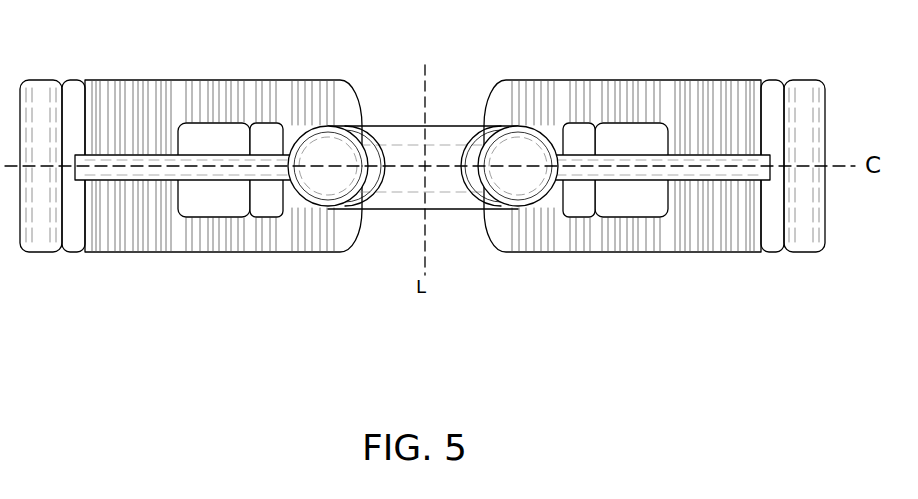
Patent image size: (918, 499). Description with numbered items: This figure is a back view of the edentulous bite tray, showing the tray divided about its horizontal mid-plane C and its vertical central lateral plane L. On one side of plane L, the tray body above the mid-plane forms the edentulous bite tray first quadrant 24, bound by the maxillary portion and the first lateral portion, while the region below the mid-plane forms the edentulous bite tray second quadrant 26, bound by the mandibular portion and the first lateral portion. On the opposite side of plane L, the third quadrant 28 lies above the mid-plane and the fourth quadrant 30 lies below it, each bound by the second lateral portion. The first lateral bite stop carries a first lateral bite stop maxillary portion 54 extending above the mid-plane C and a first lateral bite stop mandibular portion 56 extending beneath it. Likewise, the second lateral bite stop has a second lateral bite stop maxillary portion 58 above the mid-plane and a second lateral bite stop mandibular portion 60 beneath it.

The edentulous bite tray first quadrant 24 is at (713, 135).
The edentulous bite tray second quadrant 26 is at (715, 205).
The third quadrant 28 is at (120, 133).
The fourth quadrant 30 is at (124, 205).
The first lateral bite stop maxillary portion 54 is at (627, 135).
The first lateral bite stop mandibular portion 56 is at (627, 195).
The second lateral bite stop maxillary portion 58 is at (199, 135).
The second lateral bite stop mandibular portion 60 is at (200, 195).